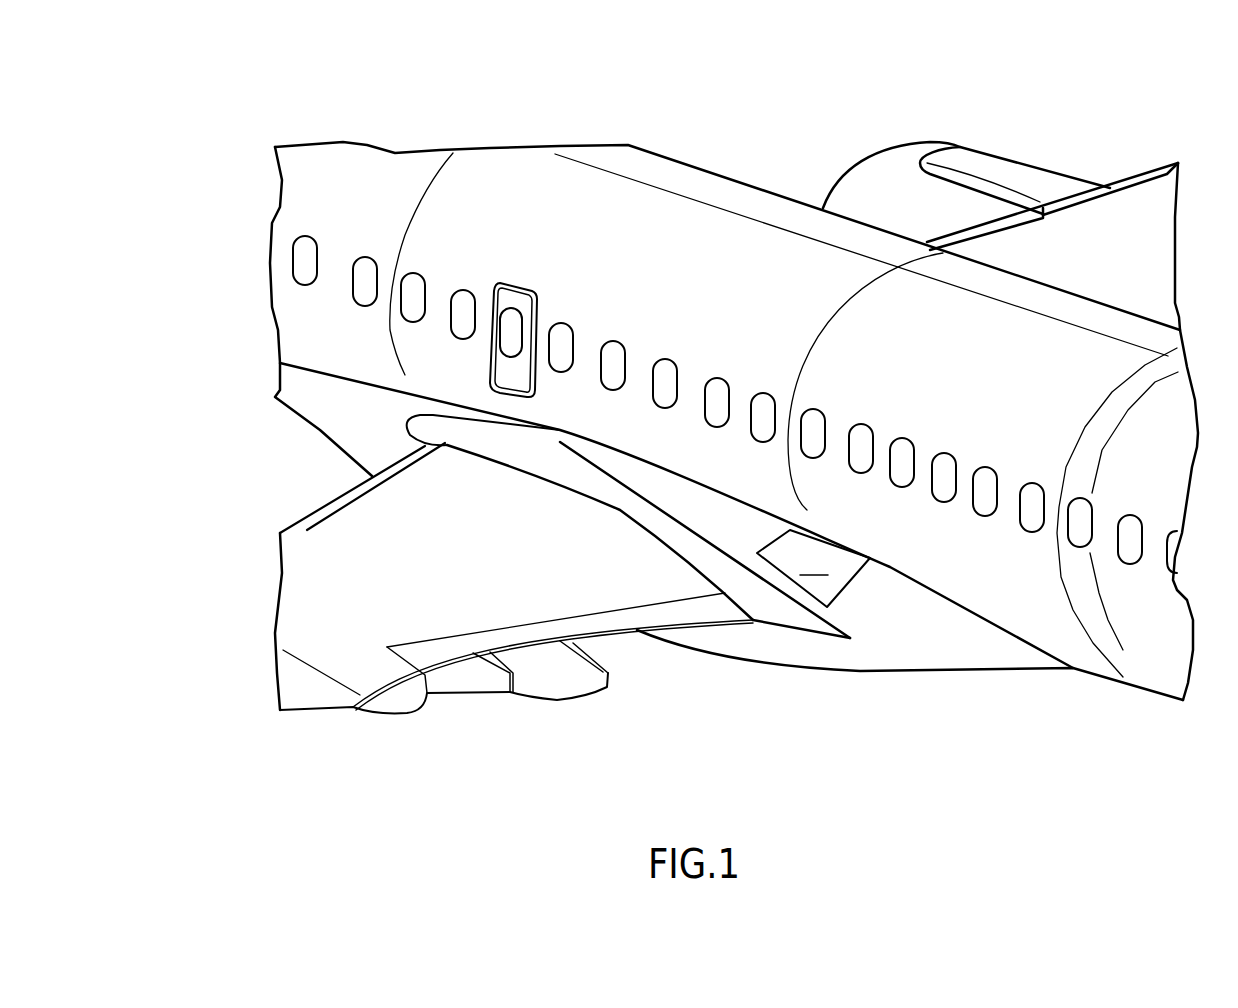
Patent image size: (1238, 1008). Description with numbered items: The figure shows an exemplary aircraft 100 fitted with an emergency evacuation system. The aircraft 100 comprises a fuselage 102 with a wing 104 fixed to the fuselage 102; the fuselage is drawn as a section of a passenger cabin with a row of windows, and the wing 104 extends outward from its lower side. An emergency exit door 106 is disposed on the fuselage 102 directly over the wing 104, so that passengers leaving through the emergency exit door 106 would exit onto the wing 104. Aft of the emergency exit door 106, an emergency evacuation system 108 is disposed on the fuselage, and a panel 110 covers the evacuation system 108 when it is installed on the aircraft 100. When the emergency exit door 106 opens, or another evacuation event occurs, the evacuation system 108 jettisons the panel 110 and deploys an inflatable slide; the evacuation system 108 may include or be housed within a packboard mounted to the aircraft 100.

The aircraft 100 is at (214, 135).
The fuselage 102 is at (303, 330).
The wing 104 is at (500, 550).
The emergency exit door 106 is at (500, 283).
The emergency evacuation system 108 is at (789, 540).
The panel 110 is at (814, 564).